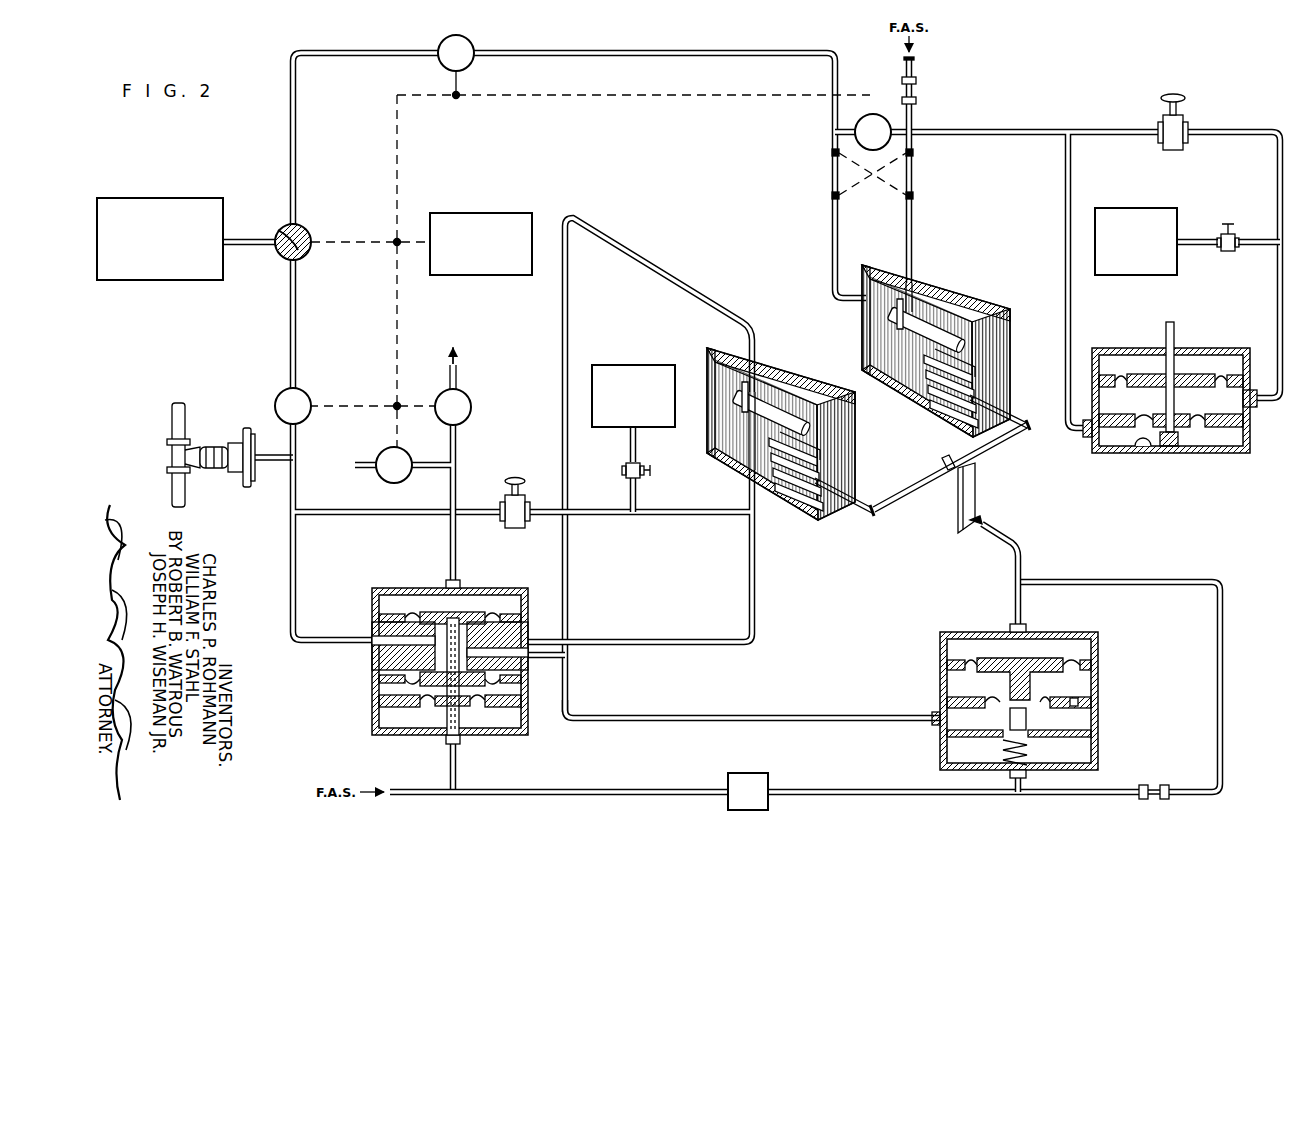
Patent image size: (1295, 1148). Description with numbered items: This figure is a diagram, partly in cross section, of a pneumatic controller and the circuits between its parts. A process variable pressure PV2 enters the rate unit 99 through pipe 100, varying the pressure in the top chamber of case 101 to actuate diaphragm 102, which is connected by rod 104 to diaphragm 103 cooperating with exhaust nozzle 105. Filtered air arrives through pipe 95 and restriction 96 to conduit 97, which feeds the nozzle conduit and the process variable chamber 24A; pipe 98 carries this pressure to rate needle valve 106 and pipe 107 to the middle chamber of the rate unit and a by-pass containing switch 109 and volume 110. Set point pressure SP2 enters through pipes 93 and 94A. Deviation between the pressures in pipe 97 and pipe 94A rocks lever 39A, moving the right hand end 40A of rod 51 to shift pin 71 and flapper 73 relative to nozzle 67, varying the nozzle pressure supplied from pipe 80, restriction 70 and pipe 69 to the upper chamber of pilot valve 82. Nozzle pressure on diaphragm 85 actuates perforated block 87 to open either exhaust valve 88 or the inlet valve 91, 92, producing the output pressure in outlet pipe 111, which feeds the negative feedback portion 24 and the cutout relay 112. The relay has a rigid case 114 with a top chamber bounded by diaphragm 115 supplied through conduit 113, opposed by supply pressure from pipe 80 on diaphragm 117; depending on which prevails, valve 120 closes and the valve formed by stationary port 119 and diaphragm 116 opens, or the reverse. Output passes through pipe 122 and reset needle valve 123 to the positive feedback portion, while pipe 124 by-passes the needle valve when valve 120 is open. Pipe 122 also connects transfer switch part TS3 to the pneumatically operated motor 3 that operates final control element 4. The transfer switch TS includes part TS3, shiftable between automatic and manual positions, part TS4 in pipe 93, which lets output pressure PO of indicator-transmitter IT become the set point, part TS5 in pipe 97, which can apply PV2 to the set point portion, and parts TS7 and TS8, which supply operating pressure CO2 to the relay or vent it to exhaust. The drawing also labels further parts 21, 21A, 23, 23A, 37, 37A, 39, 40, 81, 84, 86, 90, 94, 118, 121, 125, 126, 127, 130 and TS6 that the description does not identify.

The pneumatically operated motor 3 is at (242, 484).
The final control element 4 is at (172, 457).
The positive feedback relay 21 is at (776, 354).
The process variable relay 21A is at (900, 248).
The nozzle 23 is at (778, 392).
The nozzle 23A is at (897, 278).
The negative feedback portion 24 is at (712, 375).
The process variable chamber 24A is at (935, 300).
The bellows 37 is at (792, 488).
The bellows 37A is at (956, 412).
The beam arm 39 is at (876, 497).
The lever 39A is at (1028, 418).
The beam end 40 is at (876, 512).
The right hand end of rod 40A is at (1028, 431).
The rod 51 is at (911, 492).
The nozzle 67 is at (983, 534).
The pipe 69 is at (1127, 581).
The restriction 70 is at (1152, 789).
The pin 71 is at (750, 773).
The flapper 73 is at (977, 490).
The pipe 80 is at (448, 786).
The pipe 81 is at (1015, 592).
The pilot valve 82 is at (986, 694).
The pipe 84 is at (946, 742).
The diaphragm 85 is at (966, 658).
The passage 86 is at (980, 700).
The perforated block 87 is at (1029, 657).
The exhaust valve 88 is at (1042, 680).
The passage 90 is at (1042, 700).
The inlet valve 91 is at (1034, 742).
The inlet valve 92 is at (1006, 744).
The pipe 93 is at (290, 122).
The reverse and direct switch 94 is at (828, 172).
The pipe 94A is at (831, 232).
The pipe 95 is at (915, 62).
The restriction 96 is at (917, 90).
The conduit 97 is at (915, 118).
The pipe 98 is at (1114, 131).
The rate unit 99 is at (1181, 412).
The pipe 100 is at (1166, 332).
The case 101 is at (1115, 347).
The diaphragm 102 is at (1222, 374).
The diaphragm 103 is at (1196, 428).
The rod 104 is at (1253, 412).
The exhaust nozzle 105 is at (1143, 448).
The rate needle valve 106 is at (1176, 96).
The pipe 107 is at (1280, 270).
The switch 109 is at (1229, 222).
The volume 110 is at (1136, 213).
The outlet pipe 111 is at (566, 676).
The cutout relay 112 is at (396, 660).
The conduit 113 is at (450, 538).
The rigid case 114 is at (399, 594).
The diaphragm 115 is at (479, 614).
The diaphragm 116 is at (510, 738).
The diaphragm 117 is at (426, 736).
The stem 118 is at (452, 612).
The stationary port 119 is at (476, 738).
The valve 120 is at (486, 632).
The block 121 is at (366, 652).
The output pipe 122 is at (289, 320).
The reset needle valve 123 is at (515, 477).
The pipe 124 is at (746, 558).
The pipe 125 is at (628, 496).
The fast slow reset switch 126 is at (622, 471).
The negative feedback volume 127 is at (633, 376).
The port 130 is at (1076, 708).
The indicator-transmitter IT is at (166, 205).
The transfer switch TS is at (480, 213).
The transfer switch part TS3 is at (280, 226).
The transfer switch part TS4 is at (441, 40).
The transfer switch part TS5 is at (878, 113).
The transfer switch TS6 is at (278, 398).
The transfer switch part TS7 is at (383, 456).
The transfer switch part TS8 is at (440, 396).
The output pressure PO is at (247, 248).
The set point pressure SP2 is at (615, 50).
The process variable pressure PV2 is at (990, 134).
The operating pressure CO2 is at (424, 462).